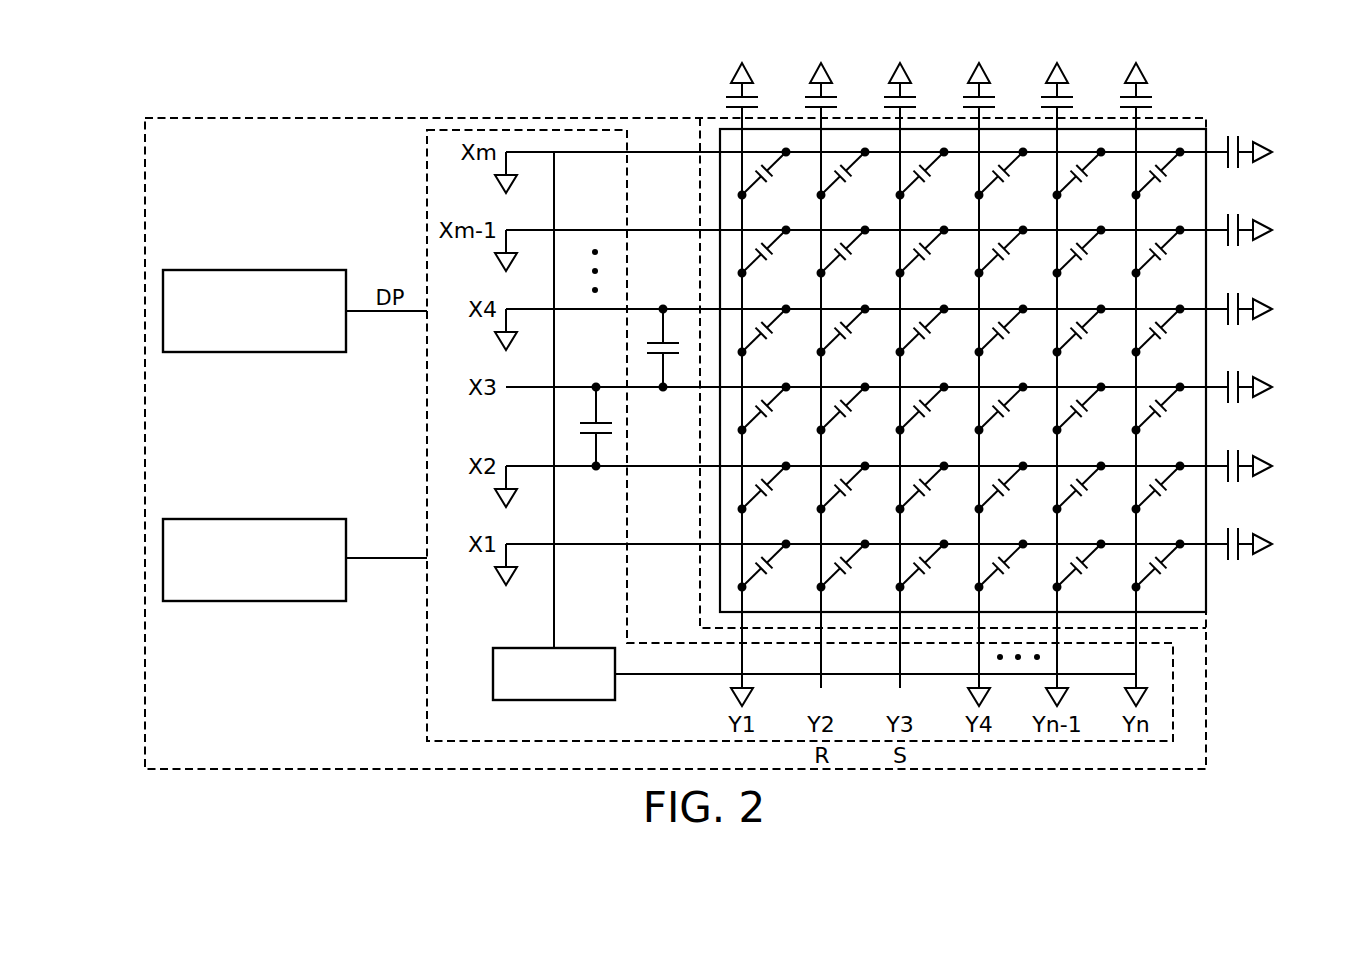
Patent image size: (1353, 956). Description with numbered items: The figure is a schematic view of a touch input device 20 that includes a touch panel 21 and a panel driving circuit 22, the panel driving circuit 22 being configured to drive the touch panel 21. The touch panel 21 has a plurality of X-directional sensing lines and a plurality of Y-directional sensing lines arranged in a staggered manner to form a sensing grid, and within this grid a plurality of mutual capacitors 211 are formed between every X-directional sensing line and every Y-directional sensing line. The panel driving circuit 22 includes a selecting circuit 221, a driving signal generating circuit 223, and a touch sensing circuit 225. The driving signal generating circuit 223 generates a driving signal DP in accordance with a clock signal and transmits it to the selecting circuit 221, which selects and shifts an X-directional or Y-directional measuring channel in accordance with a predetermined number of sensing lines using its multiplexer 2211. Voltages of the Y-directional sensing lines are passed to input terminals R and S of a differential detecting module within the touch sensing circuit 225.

The touch input device 20 is at (697, 58).
The touch panel 21 is at (1194, 108).
The mutual capacitors 211 is at (1180, 187).
The panel driving circuit 22 is at (370, 117).
The selecting circuit 221 is at (562, 129).
The multiplexer 2211 is at (615, 685).
The driving signal generating circuit 223 is at (255, 270).
The touch sensing circuit 225 is at (255, 519).